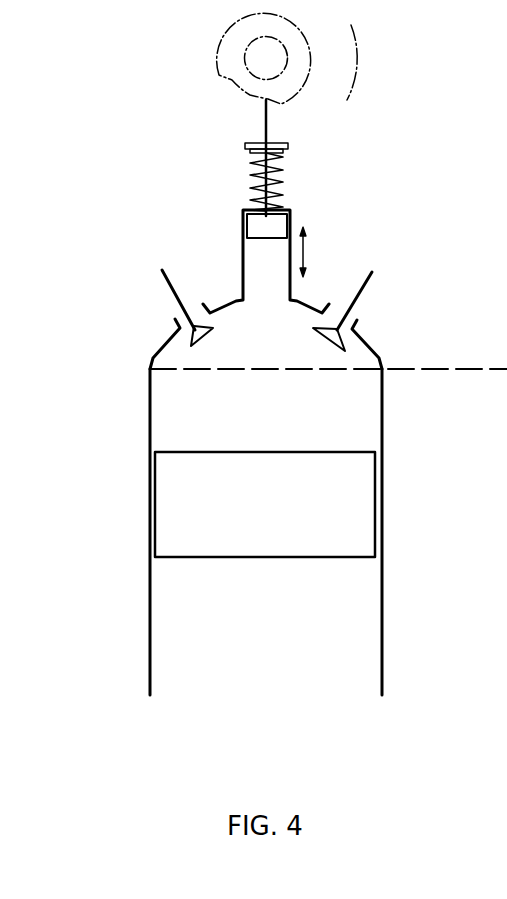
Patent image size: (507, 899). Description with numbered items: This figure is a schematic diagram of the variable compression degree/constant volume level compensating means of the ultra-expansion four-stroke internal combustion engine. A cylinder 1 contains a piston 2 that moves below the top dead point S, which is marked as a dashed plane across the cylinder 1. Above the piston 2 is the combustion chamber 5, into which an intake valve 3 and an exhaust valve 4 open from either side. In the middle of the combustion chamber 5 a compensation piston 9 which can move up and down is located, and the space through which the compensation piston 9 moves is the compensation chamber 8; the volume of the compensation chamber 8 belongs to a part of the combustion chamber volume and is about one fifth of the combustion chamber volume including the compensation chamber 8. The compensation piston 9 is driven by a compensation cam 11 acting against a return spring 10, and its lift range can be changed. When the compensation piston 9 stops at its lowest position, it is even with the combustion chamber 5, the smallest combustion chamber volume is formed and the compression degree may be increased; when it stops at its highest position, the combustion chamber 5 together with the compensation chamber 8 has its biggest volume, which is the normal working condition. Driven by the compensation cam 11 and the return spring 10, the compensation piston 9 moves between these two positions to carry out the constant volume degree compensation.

The cylinder 1 is at (315, 628).
The piston 2 is at (227, 510).
The intake valve 3 is at (180, 303).
The exhaust valve 4 is at (352, 309).
The combustion chamber 5 is at (282, 326).
The compensation chamber 8 is at (263, 280).
The compensation piston 9 is at (263, 230).
The return spring 10 is at (282, 181).
The compensation cam 11 is at (235, 55).
The top dead point S is at (328, 356).